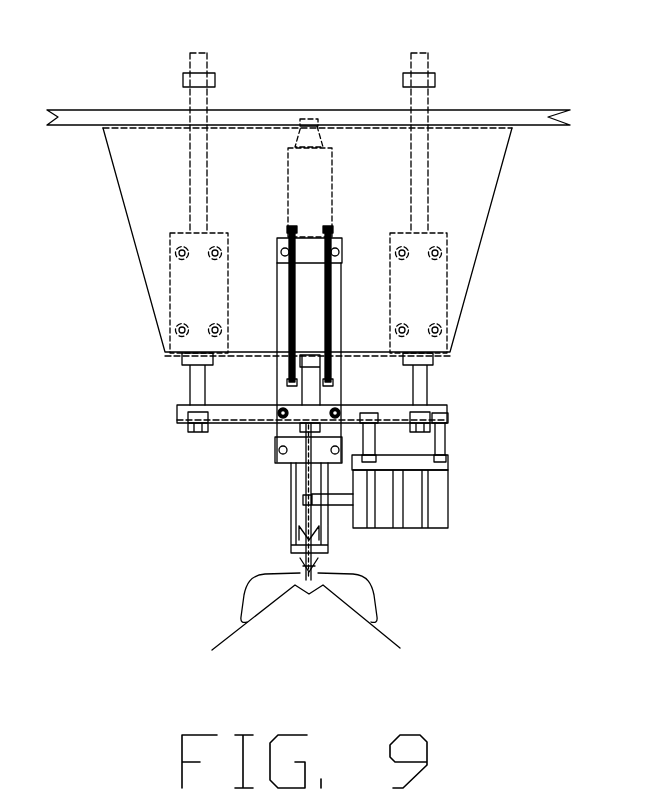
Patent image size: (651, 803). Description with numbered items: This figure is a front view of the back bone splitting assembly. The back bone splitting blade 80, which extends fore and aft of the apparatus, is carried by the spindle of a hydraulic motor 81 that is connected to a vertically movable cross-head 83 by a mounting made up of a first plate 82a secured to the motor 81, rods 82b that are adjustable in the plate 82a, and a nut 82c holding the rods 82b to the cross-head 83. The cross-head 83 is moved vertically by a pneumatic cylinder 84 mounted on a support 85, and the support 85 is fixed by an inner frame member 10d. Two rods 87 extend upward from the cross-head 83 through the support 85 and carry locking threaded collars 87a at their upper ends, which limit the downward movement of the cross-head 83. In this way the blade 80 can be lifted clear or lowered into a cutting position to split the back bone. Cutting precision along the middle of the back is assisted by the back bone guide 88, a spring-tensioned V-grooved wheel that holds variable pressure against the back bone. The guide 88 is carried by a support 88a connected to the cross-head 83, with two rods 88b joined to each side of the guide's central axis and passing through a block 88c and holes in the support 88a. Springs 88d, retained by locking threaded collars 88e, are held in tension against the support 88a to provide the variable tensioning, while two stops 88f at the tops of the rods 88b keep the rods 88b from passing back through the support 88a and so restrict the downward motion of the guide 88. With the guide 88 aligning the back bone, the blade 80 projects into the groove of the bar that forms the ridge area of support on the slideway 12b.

The inner frame member 10d is at (569, 119).
The slideway 12b is at (342, 637).
The back bone splitting blade 80 is at (306, 485).
The hydraulic motor 81 is at (437, 500).
The first plate 82a is at (437, 466).
The rod 82b is at (443, 440).
The nut 82c is at (445, 413).
The cross-head 83 is at (440, 405).
The pneumatic cylinder 84 is at (308, 162).
The support 85 is at (465, 189).
The rod 87 is at (420, 100).
The locking threaded collar 87a is at (435, 80).
The back bone guide 88 is at (300, 562).
The support 88a is at (335, 302).
The rod 88b is at (328, 528).
The block 88c is at (277, 463).
The spring 88d is at (290, 322).
The locking threaded collar 88e is at (292, 383).
The stop 88f is at (290, 233).